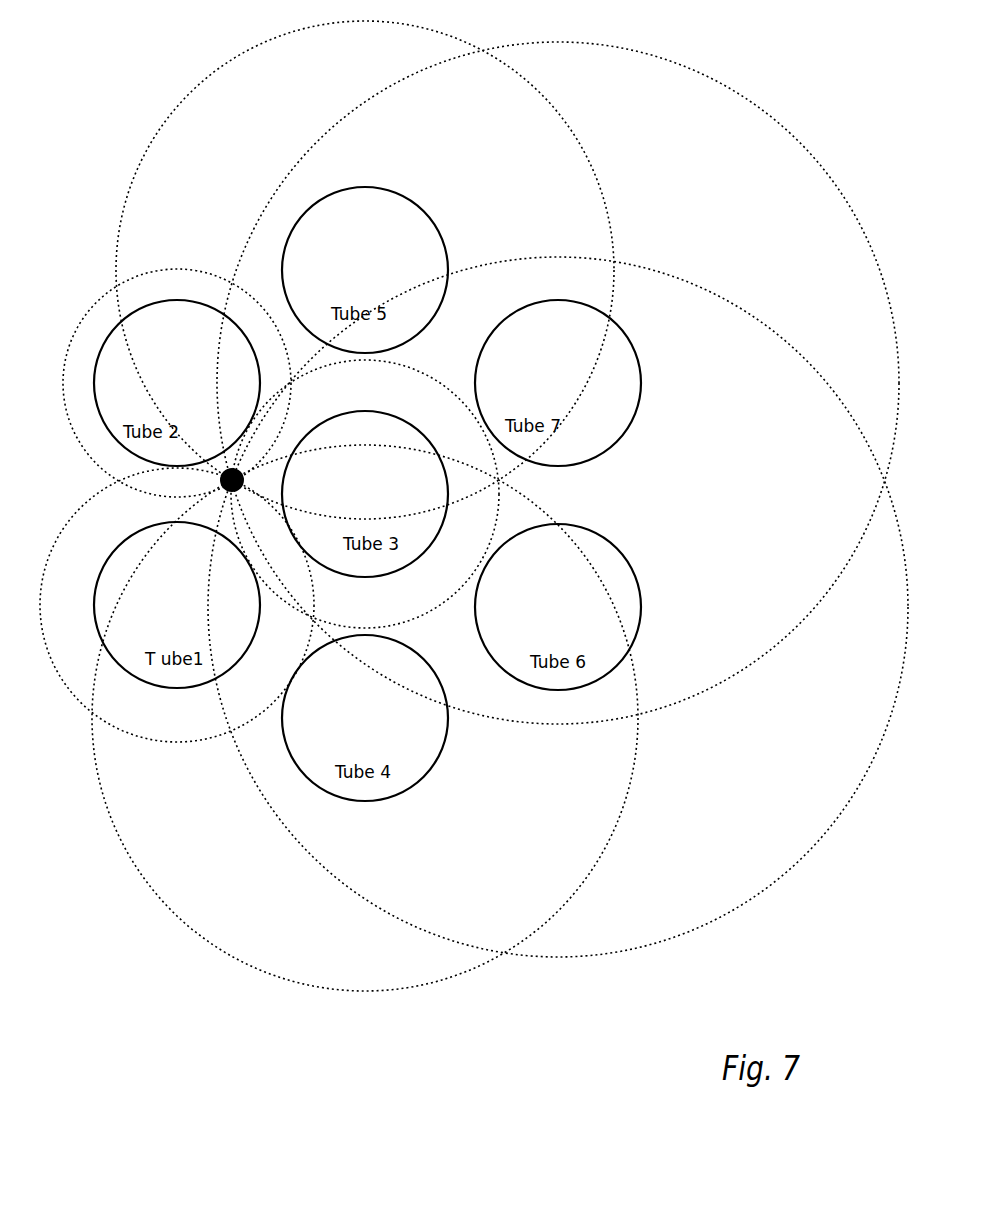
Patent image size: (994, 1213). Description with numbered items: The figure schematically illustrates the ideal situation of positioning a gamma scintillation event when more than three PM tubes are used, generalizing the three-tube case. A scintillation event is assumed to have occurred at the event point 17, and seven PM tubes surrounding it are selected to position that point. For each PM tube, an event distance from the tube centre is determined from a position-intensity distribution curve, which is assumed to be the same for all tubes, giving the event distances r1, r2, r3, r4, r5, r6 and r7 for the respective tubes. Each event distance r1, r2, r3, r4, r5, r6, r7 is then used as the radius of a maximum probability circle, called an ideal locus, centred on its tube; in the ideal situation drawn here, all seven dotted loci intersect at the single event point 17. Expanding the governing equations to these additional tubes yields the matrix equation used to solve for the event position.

The event point 17 is at (232, 468).
The event distance r1 is at (175, 605).
The event distance r2 is at (177, 383).
The event distance r3 is at (365, 497).
The event distance r4 is at (365, 718).
The event distance r5 is at (365, 270).
The event distance r6 is at (558, 607).
The event distance r7 is at (557, 382).